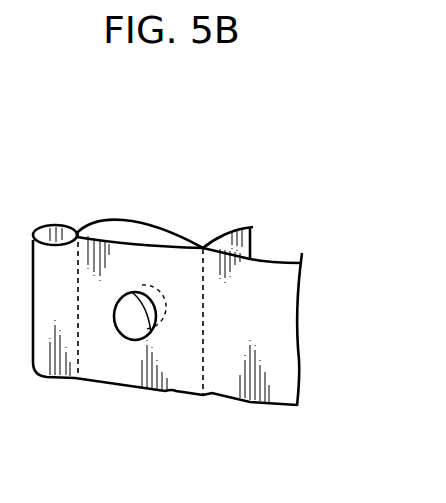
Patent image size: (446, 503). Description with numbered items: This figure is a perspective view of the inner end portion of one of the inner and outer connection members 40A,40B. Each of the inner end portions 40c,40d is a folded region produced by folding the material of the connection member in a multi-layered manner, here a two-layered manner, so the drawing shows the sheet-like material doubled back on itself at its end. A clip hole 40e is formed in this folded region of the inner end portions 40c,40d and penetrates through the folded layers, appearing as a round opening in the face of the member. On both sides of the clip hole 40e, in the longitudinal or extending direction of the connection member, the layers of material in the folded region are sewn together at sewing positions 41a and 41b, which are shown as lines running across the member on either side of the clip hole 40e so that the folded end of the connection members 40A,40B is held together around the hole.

The inner and outer connection members 40A,40B is at (273, 262).
The inner end portions 40c,40d is at (144, 214).
The sewing position 41a is at (78, 278).
The sewing position 41b is at (205, 355).
The clip hole 40e is at (130, 333).